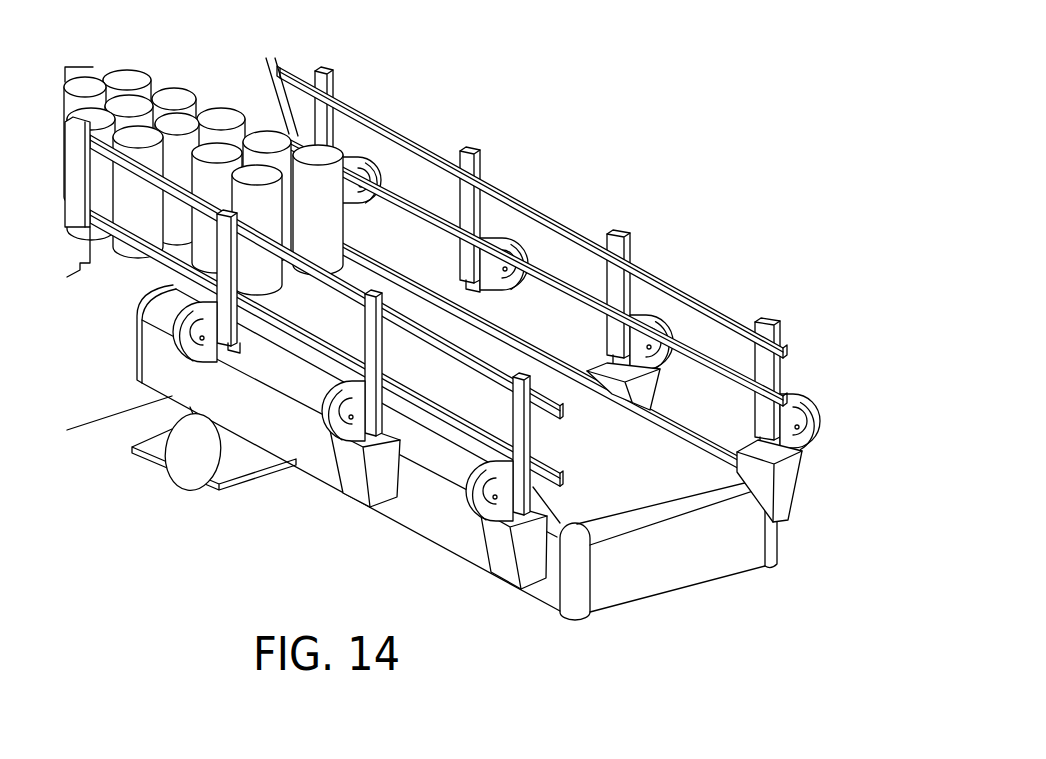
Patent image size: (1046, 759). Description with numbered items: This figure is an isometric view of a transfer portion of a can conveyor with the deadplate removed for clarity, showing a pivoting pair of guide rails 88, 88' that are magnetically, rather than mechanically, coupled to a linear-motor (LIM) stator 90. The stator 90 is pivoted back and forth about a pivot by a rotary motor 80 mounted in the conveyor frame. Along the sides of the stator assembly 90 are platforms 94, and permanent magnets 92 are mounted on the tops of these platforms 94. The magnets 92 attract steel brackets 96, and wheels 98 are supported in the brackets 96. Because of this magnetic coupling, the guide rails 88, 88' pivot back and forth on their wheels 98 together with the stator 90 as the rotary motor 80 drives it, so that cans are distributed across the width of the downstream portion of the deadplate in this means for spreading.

The rotary motor 80 is at (204, 495).
The guide rail 88 is at (325, 310).
The guide rail 88' is at (526, 232).
The LIM stator 90 is at (440, 527).
The permanent magnets 92 is at (343, 493).
The platforms 94 is at (521, 578).
The steel brackets 96 is at (790, 458).
The wheels 98 is at (803, 399).